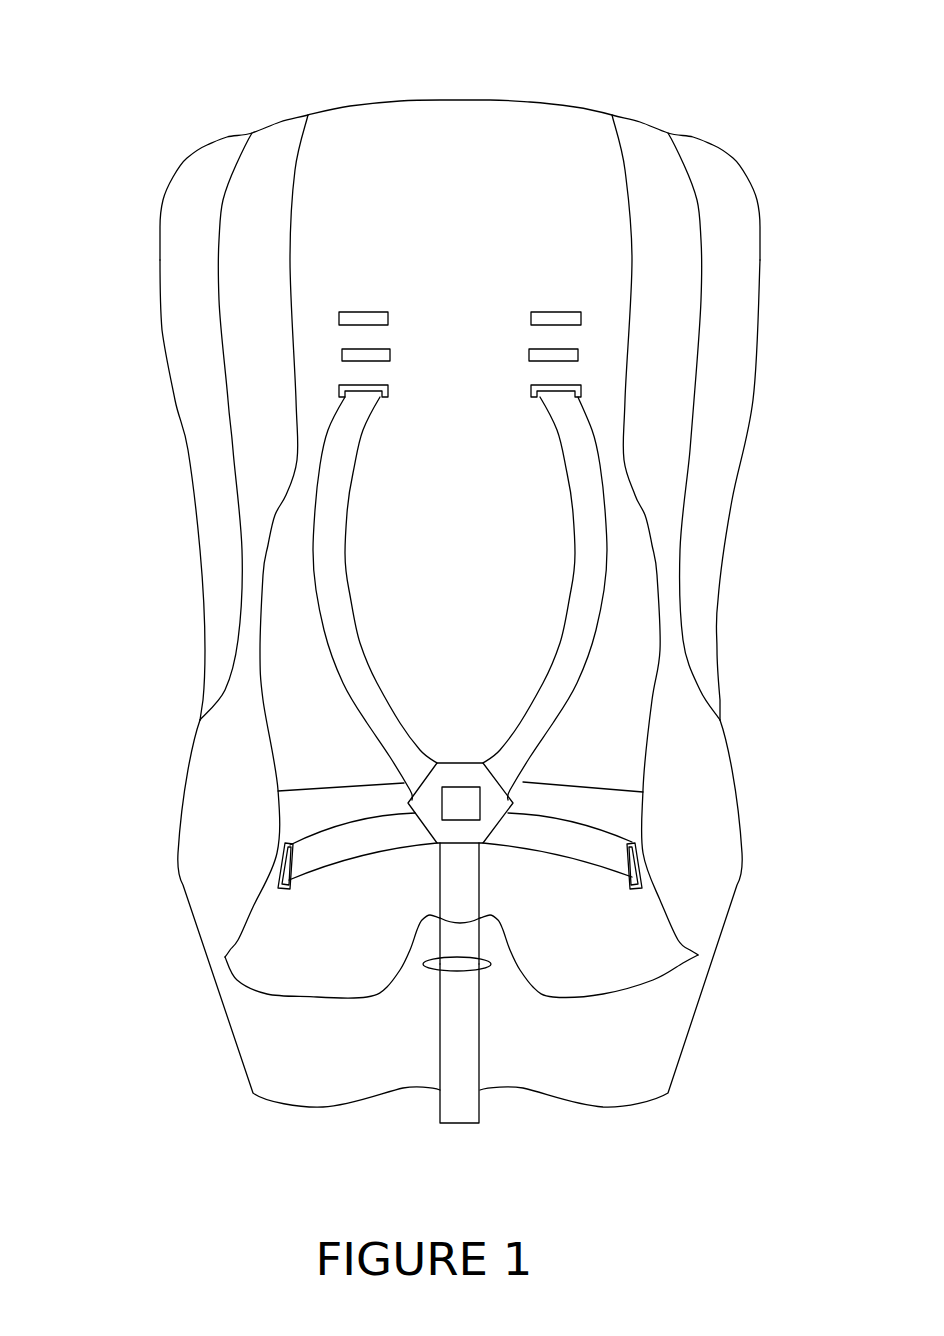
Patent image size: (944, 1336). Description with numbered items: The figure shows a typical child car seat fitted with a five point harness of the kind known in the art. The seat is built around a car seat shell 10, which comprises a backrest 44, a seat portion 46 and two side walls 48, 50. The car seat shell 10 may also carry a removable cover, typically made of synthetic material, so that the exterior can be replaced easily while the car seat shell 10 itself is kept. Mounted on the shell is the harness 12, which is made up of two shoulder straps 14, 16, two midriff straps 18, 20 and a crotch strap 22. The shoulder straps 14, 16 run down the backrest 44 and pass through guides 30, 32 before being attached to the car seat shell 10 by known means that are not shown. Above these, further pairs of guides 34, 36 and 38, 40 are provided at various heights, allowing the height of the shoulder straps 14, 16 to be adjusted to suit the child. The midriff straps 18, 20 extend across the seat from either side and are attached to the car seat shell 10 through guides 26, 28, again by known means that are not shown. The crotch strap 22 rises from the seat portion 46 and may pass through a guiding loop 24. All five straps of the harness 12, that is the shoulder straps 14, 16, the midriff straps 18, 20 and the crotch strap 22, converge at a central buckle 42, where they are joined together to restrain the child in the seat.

The car seat shell 10 is at (193, 72).
The harness 12 is at (287, 568).
The shoulder strap 14 is at (348, 420).
The shoulder strap 16 is at (572, 417).
The midriff strap 18 is at (370, 833).
The midriff strap 20 is at (557, 833).
The crotch strap 22 is at (462, 897).
The guiding loop 24 is at (482, 965).
The guide 26 is at (283, 885).
The guide 28 is at (640, 885).
The guide 30 is at (383, 393).
The guide 32 is at (538, 393).
The guide 34 is at (375, 353).
The guide 36 is at (540, 352).
The guide 38 is at (352, 317).
The guide 40 is at (538, 318).
The buckle 42 is at (458, 782).
The backrest 44 is at (423, 125).
The seat portion 46 is at (282, 977).
The side wall 48 is at (257, 302).
The side wall 50 is at (665, 268).